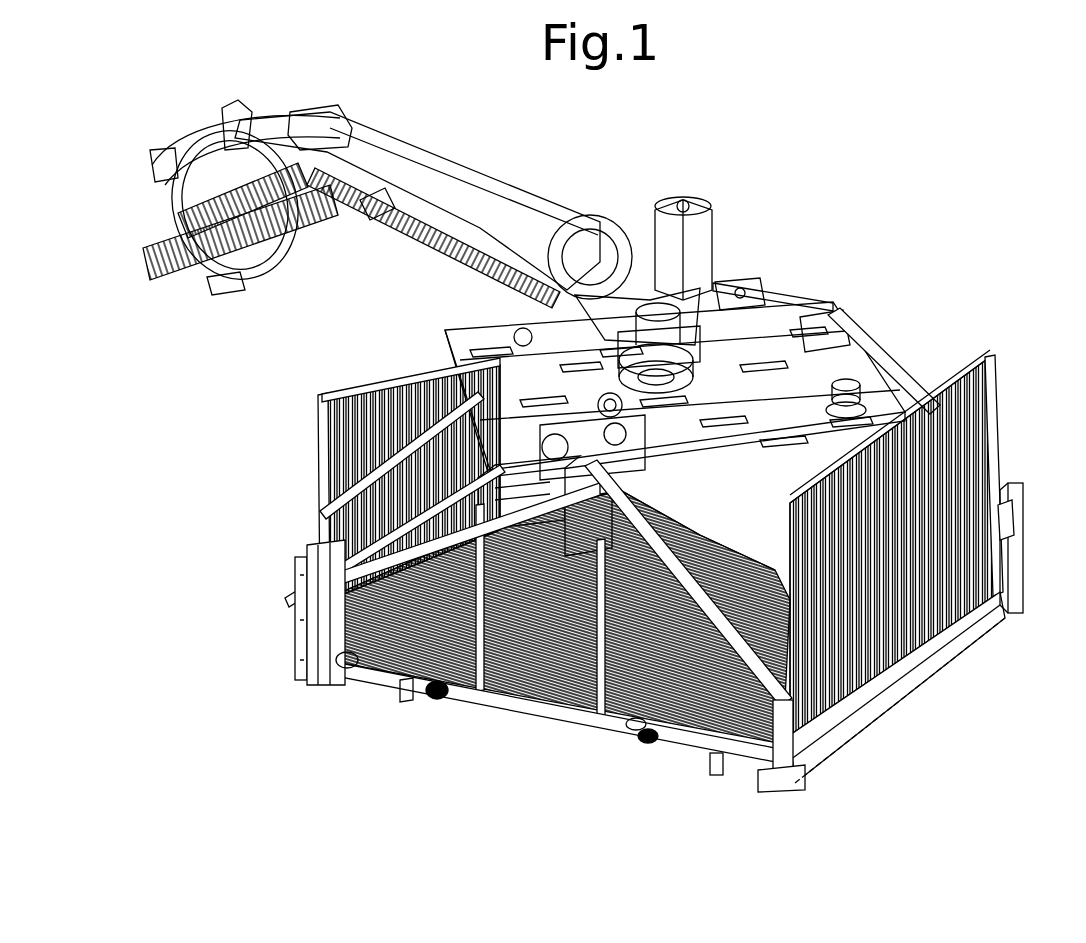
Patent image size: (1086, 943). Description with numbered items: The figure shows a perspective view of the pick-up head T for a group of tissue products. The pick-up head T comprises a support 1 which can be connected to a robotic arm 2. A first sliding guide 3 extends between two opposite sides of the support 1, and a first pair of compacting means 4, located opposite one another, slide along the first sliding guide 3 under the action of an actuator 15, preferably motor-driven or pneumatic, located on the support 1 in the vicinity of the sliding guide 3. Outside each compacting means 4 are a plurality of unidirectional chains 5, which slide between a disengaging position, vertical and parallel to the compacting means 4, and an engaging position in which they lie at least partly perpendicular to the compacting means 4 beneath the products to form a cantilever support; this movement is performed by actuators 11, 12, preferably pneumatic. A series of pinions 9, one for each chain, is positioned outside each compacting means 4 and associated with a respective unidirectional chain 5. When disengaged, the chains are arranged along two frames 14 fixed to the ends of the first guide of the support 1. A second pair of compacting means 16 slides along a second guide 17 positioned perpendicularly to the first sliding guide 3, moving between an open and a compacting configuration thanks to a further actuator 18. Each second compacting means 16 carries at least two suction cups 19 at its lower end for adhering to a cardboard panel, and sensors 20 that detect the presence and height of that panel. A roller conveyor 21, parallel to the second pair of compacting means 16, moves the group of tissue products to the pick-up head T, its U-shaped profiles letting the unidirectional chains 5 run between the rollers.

The pick-up head T is at (879, 211).
The support 1 is at (765, 315).
The robotic arm 2 is at (423, 173).
The first sliding guide 3 is at (487, 345).
The first pair of compacting means 4 is at (458, 335).
The unidirectional chains 5 is at (337, 420).
The pinions 9 is at (362, 660).
The actuator 11 is at (318, 677).
The actuator 12 is at (1000, 520).
The frames 14 is at (990, 358).
The actuator 15 is at (853, 387).
The second pair of compacting means 16 is at (570, 680).
The second guide 17 is at (723, 282).
The further actuator 18 is at (607, 400).
The suction cups 19 is at (437, 697).
The sensors 20 is at (456, 693).
The roller conveyor 21 is at (722, 753).